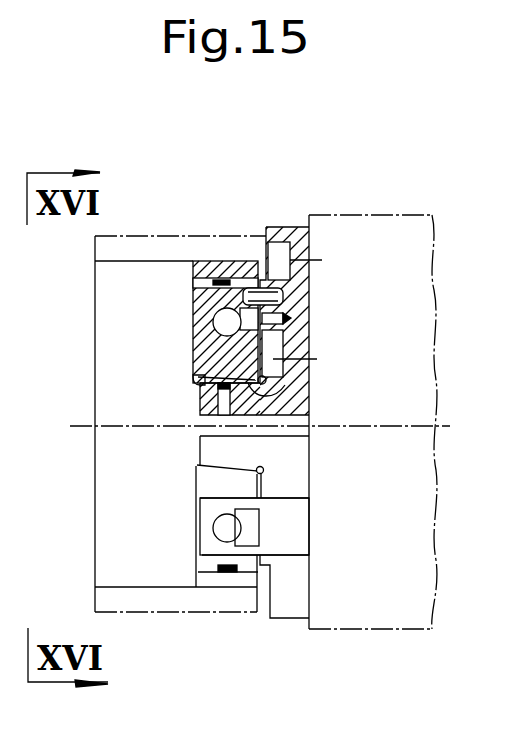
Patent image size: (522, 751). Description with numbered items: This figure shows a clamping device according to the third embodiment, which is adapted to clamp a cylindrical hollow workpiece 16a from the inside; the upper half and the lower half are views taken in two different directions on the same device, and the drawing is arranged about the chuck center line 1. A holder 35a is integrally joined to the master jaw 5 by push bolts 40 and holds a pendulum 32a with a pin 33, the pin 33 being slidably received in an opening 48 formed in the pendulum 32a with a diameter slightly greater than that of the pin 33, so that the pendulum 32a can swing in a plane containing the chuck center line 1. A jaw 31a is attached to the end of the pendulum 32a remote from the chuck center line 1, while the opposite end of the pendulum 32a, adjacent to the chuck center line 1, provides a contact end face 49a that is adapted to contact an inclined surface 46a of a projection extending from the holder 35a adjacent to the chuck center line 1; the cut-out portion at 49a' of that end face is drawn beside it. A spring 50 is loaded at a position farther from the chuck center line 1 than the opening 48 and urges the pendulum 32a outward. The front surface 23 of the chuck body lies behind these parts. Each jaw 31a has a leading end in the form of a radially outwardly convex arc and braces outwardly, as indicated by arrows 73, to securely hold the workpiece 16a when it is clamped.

The chuck center line 1 is at (387, 209).
The master jaw 5 is at (337, 214).
The cylindrical hollow workpiece 16a is at (156, 236).
The front surface of the chuck body 23 is at (299, 214).
The jaw 31a is at (213, 262).
The pendulum 32a is at (193, 365).
The pin 33 is at (216, 334).
The holder 35a is at (273, 216).
The push bolt 40 is at (305, 274).
The inclined surface 46a is at (194, 381).
The opening 48 is at (214, 317).
The contact end face 49a is at (201, 437).
The spring wire end 49a' is at (310, 429).
The spring 50 is at (292, 311).
The arrows 73 is at (181, 272).